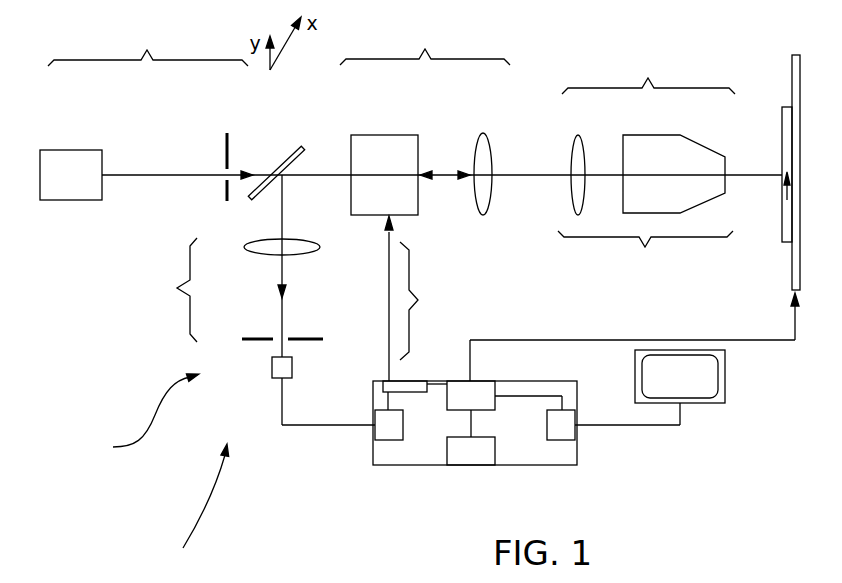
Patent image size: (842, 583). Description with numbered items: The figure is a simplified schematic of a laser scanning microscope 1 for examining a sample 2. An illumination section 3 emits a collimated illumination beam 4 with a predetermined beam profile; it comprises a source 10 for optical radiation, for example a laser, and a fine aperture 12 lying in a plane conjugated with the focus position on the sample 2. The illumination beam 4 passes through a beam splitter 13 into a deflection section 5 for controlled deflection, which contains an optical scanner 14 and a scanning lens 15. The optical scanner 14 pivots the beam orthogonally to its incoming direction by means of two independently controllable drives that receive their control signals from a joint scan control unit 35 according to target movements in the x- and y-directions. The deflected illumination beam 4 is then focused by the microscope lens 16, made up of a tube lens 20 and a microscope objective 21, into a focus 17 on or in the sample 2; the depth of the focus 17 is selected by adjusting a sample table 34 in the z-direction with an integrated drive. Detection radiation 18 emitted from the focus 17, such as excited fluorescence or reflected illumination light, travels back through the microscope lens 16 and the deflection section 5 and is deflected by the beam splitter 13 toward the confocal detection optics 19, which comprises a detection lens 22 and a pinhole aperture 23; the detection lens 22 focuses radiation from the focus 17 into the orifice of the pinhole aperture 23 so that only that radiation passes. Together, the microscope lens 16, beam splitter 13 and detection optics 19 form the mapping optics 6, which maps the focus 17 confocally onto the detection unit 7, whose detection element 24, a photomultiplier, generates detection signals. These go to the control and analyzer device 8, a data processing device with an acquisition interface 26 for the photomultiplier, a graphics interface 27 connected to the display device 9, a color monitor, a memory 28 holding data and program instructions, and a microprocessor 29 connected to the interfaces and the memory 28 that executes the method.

The laser scanning microscope 1 is at (200, 504).
The sample 2 is at (782, 107).
The illumination section 3 is at (148, 45).
The illumination beam 4 is at (162, 177).
The deflection section 5 is at (425, 44).
The mapping optics 6 is at (566, 295).
The detection unit 7 is at (149, 416).
The control and analyzer device 8 is at (540, 387).
The display device 9 is at (725, 380).
The source for optical radiation 10 is at (59, 186).
The fine aperture 12 is at (226, 134).
The beam splitter 13 is at (284, 153).
The optical scanner 14 is at (408, 135).
The scanning lens 15 is at (490, 145).
The microscope lens 16 is at (648, 72).
The focus 17 is at (785, 197).
The detection radiation 18 is at (283, 268).
The detection optics 19 is at (173, 290).
The tube lens 20 is at (585, 146).
The microscope objective 21 is at (649, 168).
The detection lens 22 is at (302, 240).
The pinhole aperture 23 is at (312, 338).
The detection element 24 is at (272, 365).
The acquisition interface 26 is at (378, 436).
The graphics interface 27 is at (550, 436).
The memory 28 is at (460, 462).
The microprocessor 29 is at (460, 407).
The sample table 34 is at (792, 56).
The scan control unit 35 is at (410, 383).